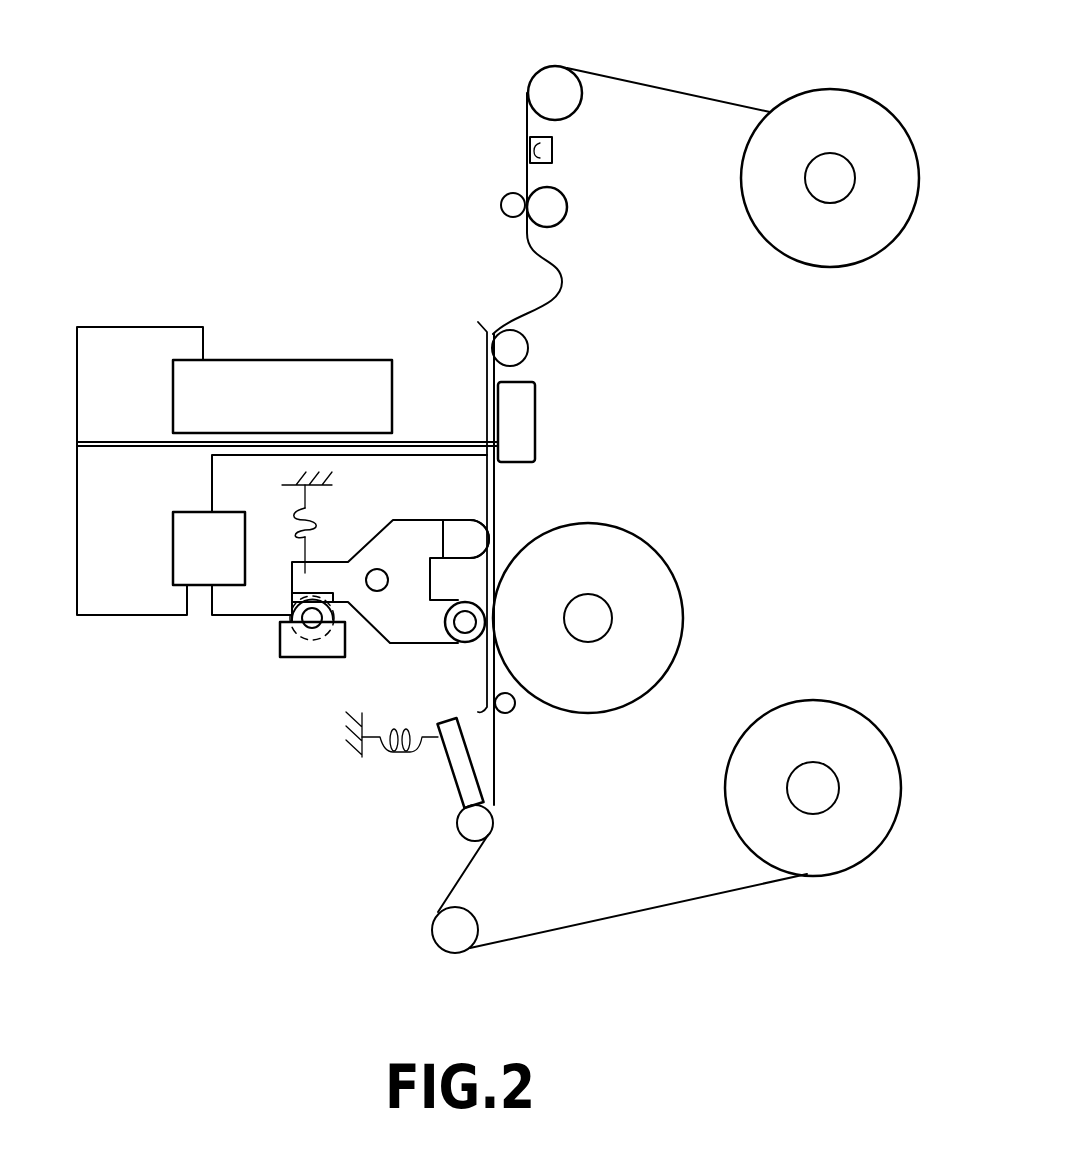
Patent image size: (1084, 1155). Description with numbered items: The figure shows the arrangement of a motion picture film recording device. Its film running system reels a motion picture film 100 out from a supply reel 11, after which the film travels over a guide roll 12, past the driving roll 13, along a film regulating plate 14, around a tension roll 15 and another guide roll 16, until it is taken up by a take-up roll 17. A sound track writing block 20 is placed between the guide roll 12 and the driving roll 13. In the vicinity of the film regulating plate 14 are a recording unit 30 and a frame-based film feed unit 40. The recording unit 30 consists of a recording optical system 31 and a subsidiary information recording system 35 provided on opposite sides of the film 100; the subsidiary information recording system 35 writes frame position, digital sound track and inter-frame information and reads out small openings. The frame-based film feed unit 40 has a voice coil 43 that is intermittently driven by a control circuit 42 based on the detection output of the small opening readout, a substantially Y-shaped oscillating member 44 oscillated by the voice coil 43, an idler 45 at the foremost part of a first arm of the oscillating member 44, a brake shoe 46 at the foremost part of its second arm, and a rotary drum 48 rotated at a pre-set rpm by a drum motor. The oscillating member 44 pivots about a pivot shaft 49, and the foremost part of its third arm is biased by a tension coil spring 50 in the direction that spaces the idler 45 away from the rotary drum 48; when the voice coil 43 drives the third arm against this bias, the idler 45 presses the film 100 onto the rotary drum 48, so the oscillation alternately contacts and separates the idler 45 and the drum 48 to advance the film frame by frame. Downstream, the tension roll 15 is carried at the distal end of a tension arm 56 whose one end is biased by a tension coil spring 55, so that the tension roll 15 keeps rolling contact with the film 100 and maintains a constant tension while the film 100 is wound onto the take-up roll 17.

The motion picture film 100 is at (684, 90).
The supply reel 11 is at (855, 122).
The guide roll 12 is at (553, 82).
The driving roll 13 is at (547, 201).
The film regulating plate 14 is at (480, 342).
The tension roll 15 is at (468, 826).
The guide roll 16 is at (448, 935).
The take-up roll 17 is at (822, 730).
The sound track writing block 20 is at (555, 147).
The recording unit 30 is at (388, 288).
The recording optical system 31 is at (270, 378).
The subsidiary information recording system 35 is at (513, 402).
The frame-based film feed unit 40 is at (668, 508).
The control circuit 42 is at (188, 546).
The voice coil 43 is at (293, 628).
The oscillating member 44 is at (392, 617).
The idler 45 is at (452, 643).
The brake shoe 46 is at (468, 538).
The rotary drum 48 is at (603, 686).
The pivot shaft 49 is at (380, 575).
The tension coil spring 50 is at (292, 520).
The tension coil spring 55 is at (372, 742).
The lever 56 is at (450, 767).